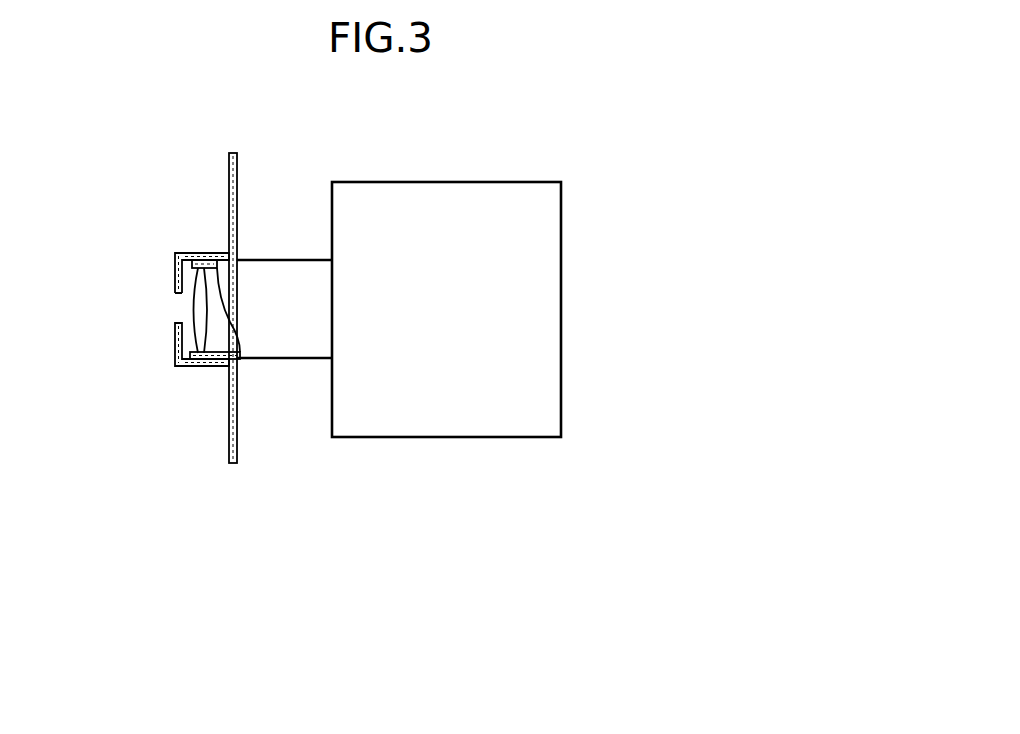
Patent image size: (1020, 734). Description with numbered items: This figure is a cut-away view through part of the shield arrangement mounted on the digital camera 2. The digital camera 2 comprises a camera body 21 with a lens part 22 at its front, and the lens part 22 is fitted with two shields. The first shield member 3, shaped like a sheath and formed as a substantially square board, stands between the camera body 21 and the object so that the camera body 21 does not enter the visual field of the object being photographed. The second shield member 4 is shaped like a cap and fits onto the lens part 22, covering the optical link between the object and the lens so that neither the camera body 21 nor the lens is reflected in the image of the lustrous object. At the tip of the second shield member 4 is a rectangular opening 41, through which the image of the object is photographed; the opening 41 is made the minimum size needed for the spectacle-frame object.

The digital camera 2 is at (535, 341).
The camera body 21 is at (562, 395).
The lens part 22 is at (294, 360).
The first shield member 3 is at (237, 185).
The second shield member 4 is at (205, 370).
The opening 41 is at (173, 308).